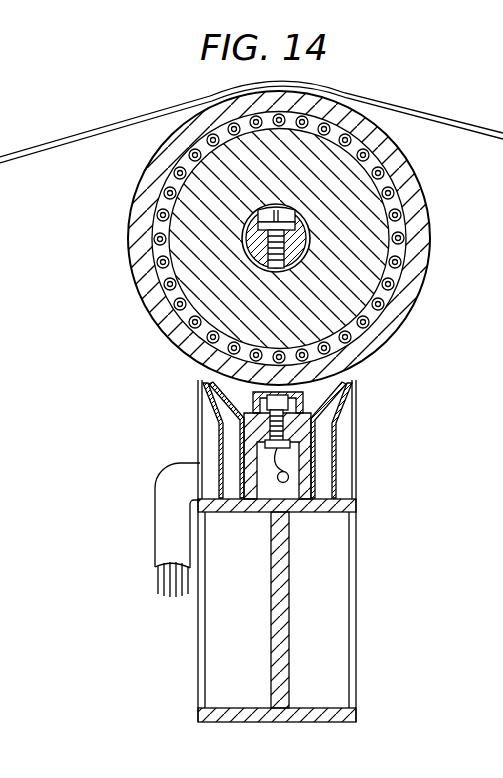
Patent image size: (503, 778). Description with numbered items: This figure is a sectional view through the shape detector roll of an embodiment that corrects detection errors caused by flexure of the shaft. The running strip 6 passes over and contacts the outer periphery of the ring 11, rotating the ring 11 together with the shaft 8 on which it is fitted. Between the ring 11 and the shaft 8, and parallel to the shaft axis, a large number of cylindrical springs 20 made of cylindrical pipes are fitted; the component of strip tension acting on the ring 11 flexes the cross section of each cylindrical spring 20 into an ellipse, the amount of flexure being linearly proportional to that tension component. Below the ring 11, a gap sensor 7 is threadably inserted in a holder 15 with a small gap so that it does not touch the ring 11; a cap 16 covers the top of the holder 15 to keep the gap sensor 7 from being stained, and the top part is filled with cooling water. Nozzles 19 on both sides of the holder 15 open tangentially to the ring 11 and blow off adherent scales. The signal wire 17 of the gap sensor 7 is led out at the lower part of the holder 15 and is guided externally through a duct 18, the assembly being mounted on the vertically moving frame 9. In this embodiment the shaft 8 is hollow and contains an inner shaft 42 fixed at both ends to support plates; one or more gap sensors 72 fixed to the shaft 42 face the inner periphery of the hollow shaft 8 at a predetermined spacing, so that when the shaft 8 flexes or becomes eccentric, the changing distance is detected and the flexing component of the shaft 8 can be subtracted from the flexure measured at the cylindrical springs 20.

The strip 6 is at (411, 113).
The shaft 8 is at (410, 305).
The ring 11 is at (420, 217).
The cylindrical spring 20 is at (406, 235).
The gap sensor 72 is at (247, 266).
The shaft 42 is at (265, 245).
The cap 16 is at (352, 381).
The nozzle 19 is at (338, 412).
The holder 15 is at (308, 470).
The gap sensor 7 is at (304, 424).
The vertically moving frame 9 is at (286, 612).
The duct 18 is at (165, 518).
The signal wire 17 is at (158, 585).